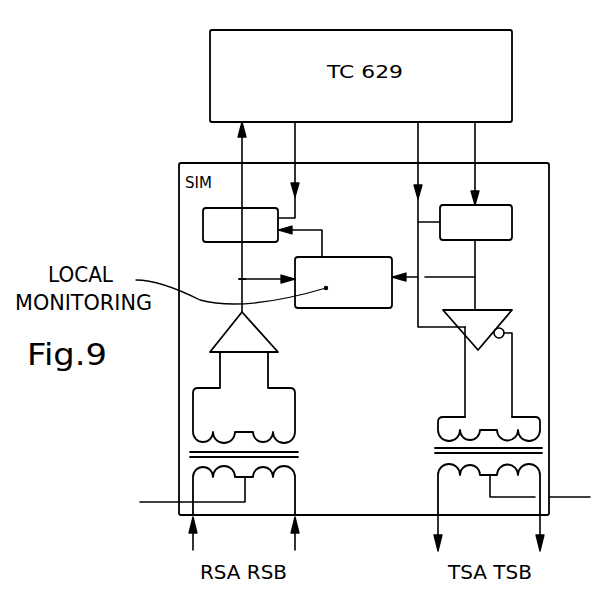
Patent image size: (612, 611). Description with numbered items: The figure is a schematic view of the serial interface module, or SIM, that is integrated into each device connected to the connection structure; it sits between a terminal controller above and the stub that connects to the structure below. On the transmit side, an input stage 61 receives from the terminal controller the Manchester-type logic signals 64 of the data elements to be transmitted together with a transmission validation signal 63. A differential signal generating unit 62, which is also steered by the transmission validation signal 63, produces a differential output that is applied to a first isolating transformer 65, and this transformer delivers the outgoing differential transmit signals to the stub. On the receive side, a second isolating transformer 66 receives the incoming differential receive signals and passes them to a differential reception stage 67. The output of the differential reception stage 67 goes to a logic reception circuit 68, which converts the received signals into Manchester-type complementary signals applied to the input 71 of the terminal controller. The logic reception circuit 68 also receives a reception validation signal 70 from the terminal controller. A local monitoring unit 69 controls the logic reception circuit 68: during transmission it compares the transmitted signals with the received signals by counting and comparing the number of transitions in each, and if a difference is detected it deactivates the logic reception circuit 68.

The input stage 61 is at (512, 220).
The differential signal generating unit 62 is at (498, 307).
The transmission validation signal 63 is at (415, 183).
The Manchester-type logic signals 64 is at (478, 152).
The first isolating transformer 65 is at (437, 453).
The second isolating transformer 66 is at (297, 457).
The differential reception stage 67 is at (270, 340).
The logic reception circuit 68 is at (218, 245).
The local monitoring unit 69 is at (378, 312).
The reception validation signal 70 is at (298, 177).
The input of the terminal controller 71 is at (243, 153).